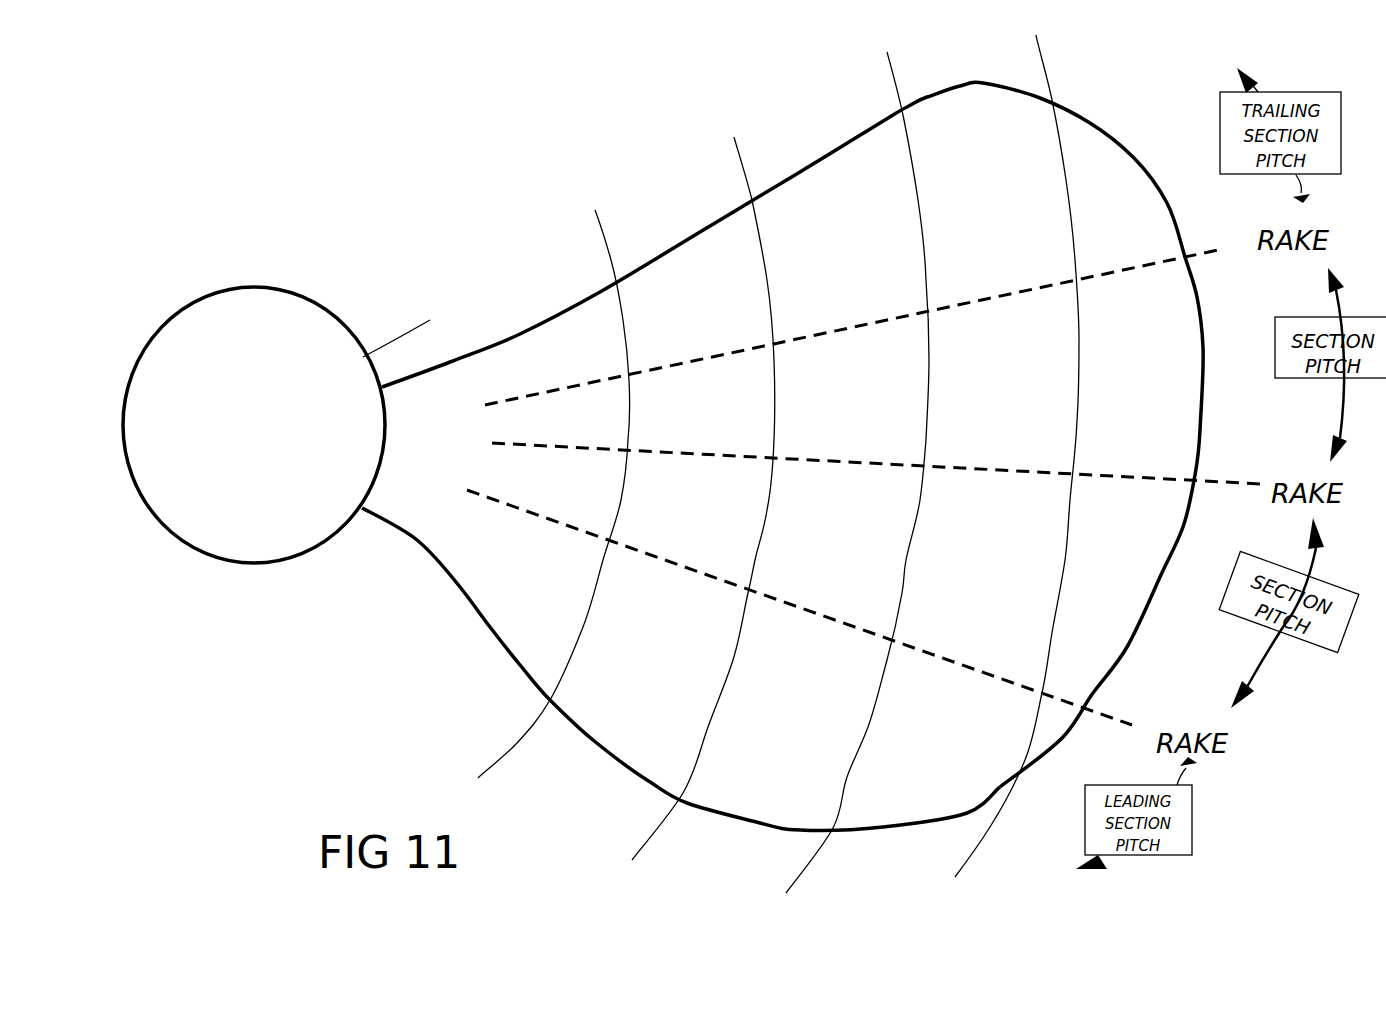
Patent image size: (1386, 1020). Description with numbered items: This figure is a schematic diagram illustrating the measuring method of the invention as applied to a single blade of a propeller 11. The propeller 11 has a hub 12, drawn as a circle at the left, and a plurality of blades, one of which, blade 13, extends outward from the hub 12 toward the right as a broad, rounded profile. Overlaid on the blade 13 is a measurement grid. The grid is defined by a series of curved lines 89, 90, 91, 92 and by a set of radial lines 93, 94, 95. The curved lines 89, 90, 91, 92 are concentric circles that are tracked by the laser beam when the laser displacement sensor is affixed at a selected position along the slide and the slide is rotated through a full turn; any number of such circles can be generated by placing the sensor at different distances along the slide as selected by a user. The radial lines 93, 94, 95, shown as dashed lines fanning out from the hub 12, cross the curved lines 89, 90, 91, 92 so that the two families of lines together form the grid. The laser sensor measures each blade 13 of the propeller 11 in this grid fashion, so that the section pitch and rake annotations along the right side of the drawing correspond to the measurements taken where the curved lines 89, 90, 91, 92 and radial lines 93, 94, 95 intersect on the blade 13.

The propeller 11 is at (447, 368).
The hub 12 is at (265, 564).
The blade 13 is at (508, 607).
The curved line 89 is at (601, 223).
The curved line 90 is at (740, 148).
The curved line 91 is at (897, 81).
The curved line 92 is at (1051, 75).
The radial line 93 is at (718, 350).
The radial line 94 is at (720, 455).
The radial line 95 is at (712, 573).